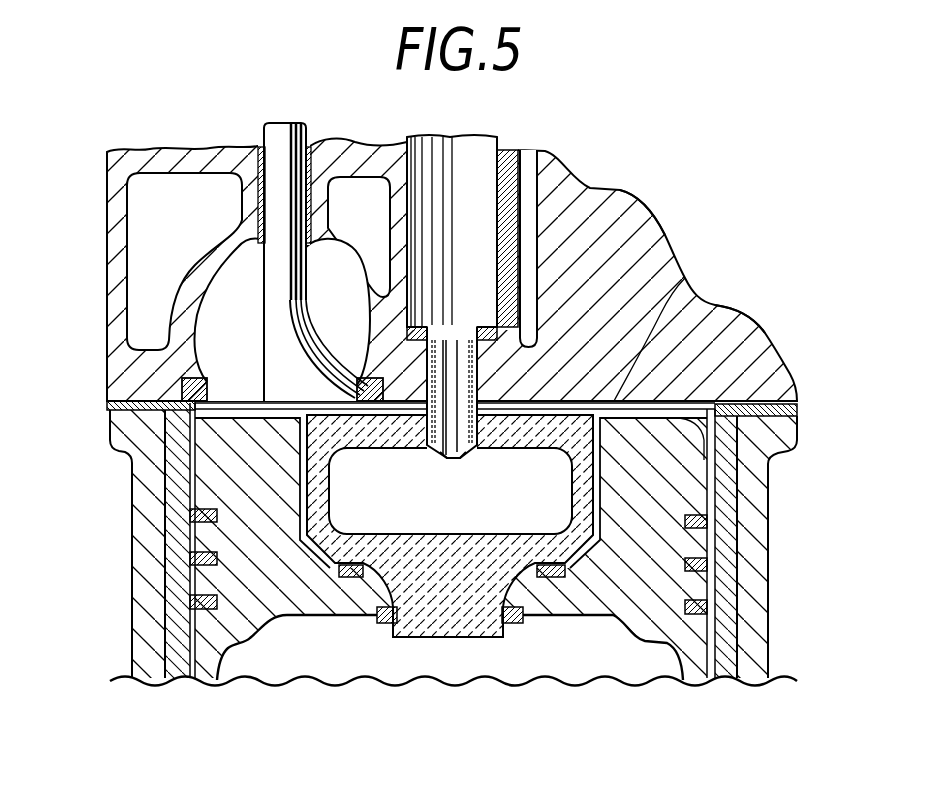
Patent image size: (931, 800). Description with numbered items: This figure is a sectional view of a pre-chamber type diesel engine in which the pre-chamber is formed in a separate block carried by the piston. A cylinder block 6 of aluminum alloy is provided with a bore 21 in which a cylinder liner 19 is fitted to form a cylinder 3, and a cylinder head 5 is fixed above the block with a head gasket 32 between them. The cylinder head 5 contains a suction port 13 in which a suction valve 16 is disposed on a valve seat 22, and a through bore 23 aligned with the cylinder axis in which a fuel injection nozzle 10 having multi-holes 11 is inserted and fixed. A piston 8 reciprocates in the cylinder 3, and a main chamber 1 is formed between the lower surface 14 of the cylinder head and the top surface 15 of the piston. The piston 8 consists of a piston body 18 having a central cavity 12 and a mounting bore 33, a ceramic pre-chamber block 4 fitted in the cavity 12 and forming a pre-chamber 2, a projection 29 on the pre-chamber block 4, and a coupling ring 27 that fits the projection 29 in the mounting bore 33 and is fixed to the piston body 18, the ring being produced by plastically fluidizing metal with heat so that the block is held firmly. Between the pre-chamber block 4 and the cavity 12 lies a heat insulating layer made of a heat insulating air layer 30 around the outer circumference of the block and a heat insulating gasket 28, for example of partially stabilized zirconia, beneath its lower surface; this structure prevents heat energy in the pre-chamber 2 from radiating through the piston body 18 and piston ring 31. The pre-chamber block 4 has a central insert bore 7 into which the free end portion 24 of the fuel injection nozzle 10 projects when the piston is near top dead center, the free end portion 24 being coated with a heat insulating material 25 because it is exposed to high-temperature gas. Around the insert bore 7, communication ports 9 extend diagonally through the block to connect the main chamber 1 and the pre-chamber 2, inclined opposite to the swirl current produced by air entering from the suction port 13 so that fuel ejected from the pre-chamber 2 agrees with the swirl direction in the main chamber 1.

The main chamber 1 is at (683, 322).
The pre-chamber 2 is at (350, 522).
The cylinder 3 is at (190, 493).
The pre-chamber block 4 is at (317, 490).
The cylinder head 5 is at (693, 318).
The cylinder block 6 is at (143, 590).
The insert bore 7 is at (462, 450).
The piston 8 is at (549, 624).
The communication ports 9 is at (390, 452).
The fuel injection nozzle 10 is at (470, 147).
The multi-holes 11 is at (450, 452).
The cavity 12 is at (587, 620).
The suction port 13 is at (228, 290).
The lower surface of the cylinder head 14 is at (703, 455).
The top surface of the piston 15 is at (532, 417).
The suction valve 16 is at (263, 368).
The piston body 18 is at (653, 543).
The cylinder liner 19 is at (190, 637).
The bore 21 is at (740, 537).
The valve seat 22 is at (182, 384).
The through bore 23 is at (448, 353).
The free end portion of the fuel injection nozzle 24 is at (669, 262).
The heat insulating material 25 is at (522, 300).
The coupling ring 27 is at (515, 625).
The heat insulating gasket 28 is at (342, 580).
The projection 29 is at (437, 638).
The heat insulating air layer 30 is at (200, 460).
The piston ring 31 is at (195, 556).
The head gasket 32 is at (775, 401).
The mounting bore 33 is at (393, 620).